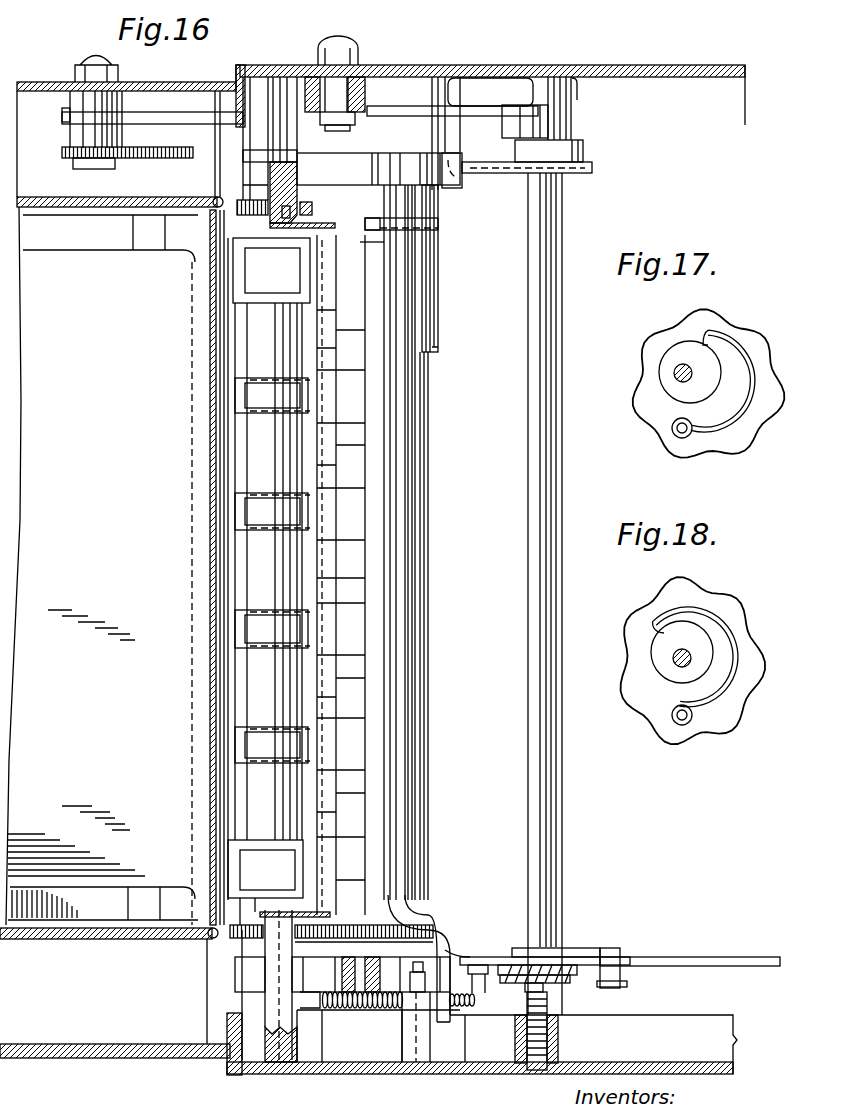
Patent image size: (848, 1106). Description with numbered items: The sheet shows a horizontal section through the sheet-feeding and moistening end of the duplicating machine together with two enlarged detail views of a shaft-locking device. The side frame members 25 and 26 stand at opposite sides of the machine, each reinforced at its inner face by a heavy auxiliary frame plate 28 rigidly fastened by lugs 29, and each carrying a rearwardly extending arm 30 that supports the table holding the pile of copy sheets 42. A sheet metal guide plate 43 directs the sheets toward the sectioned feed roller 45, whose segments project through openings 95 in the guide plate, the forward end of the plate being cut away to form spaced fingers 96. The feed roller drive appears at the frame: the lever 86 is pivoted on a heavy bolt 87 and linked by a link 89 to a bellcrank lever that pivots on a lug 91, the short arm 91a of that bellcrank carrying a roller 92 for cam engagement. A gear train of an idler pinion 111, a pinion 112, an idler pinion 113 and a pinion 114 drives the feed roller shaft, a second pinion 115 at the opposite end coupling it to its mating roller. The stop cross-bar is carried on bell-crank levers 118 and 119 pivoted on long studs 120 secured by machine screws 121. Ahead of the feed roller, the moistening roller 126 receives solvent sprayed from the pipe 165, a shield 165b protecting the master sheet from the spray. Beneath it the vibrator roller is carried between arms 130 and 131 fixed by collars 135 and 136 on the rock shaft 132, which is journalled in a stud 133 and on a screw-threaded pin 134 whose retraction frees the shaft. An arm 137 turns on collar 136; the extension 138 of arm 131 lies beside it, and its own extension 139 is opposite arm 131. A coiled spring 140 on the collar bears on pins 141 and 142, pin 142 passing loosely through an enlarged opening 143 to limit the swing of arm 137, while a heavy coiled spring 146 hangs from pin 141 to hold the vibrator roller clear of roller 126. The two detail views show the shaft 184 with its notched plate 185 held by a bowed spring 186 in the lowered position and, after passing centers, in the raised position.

In FIG. 16, the frame member 25 is at (637, 72).
In FIG. 16, the frame member 26 is at (510, 1060).
In FIG. 17, the frame member 26 is at (748, 325).
In FIG. 18, the frame member 26 is at (630, 632).
In FIG. 16, the auxiliary frame plate 28 is at (385, 170).
In FIG. 16, the lug 29 is at (258, 90).
In FIG. 16, the arm 30 is at (35, 95).
In FIG. 16, the copy sheets 42 is at (48, 265).
In FIG. 16, the guide plate 43 is at (212, 443).
In FIG. 16, the feed roller 45 is at (236, 401).
In FIG. 16, the lever 86 is at (70, 152).
In FIG. 16, the bolt 87 is at (100, 165).
In FIG. 16, the link 89 is at (143, 118).
In FIG. 16, the lug 91 is at (365, 88).
In FIG. 16, the short arm 91a is at (452, 97).
In FIG. 16, the roller 92 is at (548, 125).
In FIG. 16, the openings 95 is at (243, 380).
In FIG. 16, the fingers 96 is at (352, 520).
In FIG. 16, the idler pinion 111 is at (370, 940).
In FIG. 16, the pinion 112 is at (440, 920).
In FIG. 16, the idler pinion 113 is at (325, 942).
In FIG. 16, the pinion 114 is at (232, 940).
In FIG. 16, the pinion 115 is at (312, 208).
In FIG. 16, the bell-crank lever 118 is at (298, 895).
In FIG. 16, the bell-crank lever 119 is at (308, 232).
In FIG. 16, the stud 120 is at (298, 160).
In FIG. 16, the machine screw 121 is at (292, 178).
In FIG. 16, the roller 126 is at (412, 558).
In FIG. 16, the arm 130 is at (510, 173).
In FIG. 16, the arm 131 is at (480, 945).
In FIG. 16, the rock shaft 132 is at (548, 820).
In FIG. 16, the stud 133 is at (548, 88).
In FIG. 16, the screw-threaded pin 134 is at (560, 1038).
In FIG. 16, the collar 135 is at (583, 152).
In FIG. 16, the collar 136 is at (563, 983).
In FIG. 16, the arm 137 is at (730, 960).
In FIG. 16, the extension 138 is at (582, 948).
In FIG. 16, the extension 139 is at (470, 957).
In FIG. 16, the coiled spring 140 is at (520, 983).
In FIG. 16, the pin 141 is at (480, 1008).
In FIG. 16, the pin 142 is at (620, 973).
In FIG. 16, the opening 143 is at (620, 955).
In FIG. 16, the coiled spring 146 is at (375, 1010).
In FIG. 16, the pipe 165 is at (395, 698).
In FIG. 16, the shield 165b is at (438, 330).
In FIG. 17, the shaft 184 is at (674, 373).
In FIG. 18, the shaft 184 is at (677, 668).
In FIG. 17, the notched plate 185 is at (668, 355).
In FIG. 18, the notched plate 185 is at (700, 637).
In FIG. 17, the bowed spring 186 is at (735, 415).
In FIG. 18, the bowed spring 186 is at (715, 698).